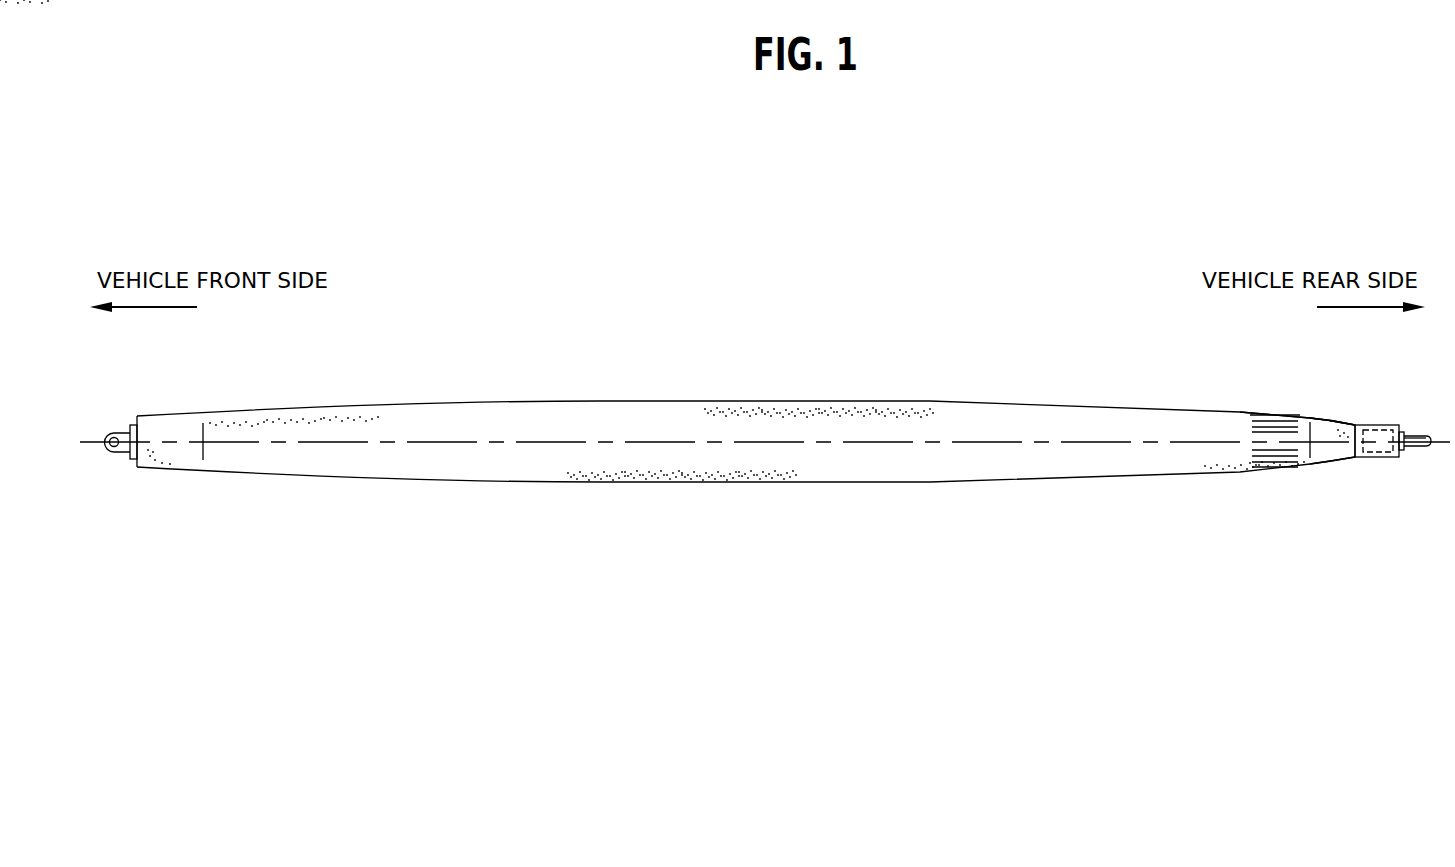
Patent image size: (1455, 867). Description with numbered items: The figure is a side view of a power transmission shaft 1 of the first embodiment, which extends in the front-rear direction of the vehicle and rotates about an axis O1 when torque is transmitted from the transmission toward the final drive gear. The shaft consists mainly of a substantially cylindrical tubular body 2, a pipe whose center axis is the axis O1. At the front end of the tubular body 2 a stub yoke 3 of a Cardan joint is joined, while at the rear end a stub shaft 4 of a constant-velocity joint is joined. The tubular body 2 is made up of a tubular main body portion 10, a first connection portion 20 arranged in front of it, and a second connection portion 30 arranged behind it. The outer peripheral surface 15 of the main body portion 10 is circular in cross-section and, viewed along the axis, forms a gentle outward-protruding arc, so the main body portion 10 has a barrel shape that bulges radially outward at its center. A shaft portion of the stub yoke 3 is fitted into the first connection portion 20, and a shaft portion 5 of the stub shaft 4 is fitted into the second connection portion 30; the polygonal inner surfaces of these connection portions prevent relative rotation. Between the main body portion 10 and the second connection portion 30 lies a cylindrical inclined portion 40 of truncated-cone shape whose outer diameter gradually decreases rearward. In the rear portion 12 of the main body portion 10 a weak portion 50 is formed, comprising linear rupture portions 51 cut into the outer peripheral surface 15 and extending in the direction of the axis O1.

The power transmission shaft 1 is at (716, 270).
The tubular body 2 is at (746, 421).
The stub yoke 3 is at (130, 430).
The stub shaft 4 is at (1415, 437).
The shaft portion 5 is at (1373, 425).
The main body portion 10 is at (971, 470).
The rear portion 12 is at (1305, 418).
The outer peripheral surface 15 is at (1092, 456).
The first connection portion 20 is at (190, 458).
The second connection portion 30 is at (1384, 443).
The inclined portion 40 is at (1327, 450).
The weak portion 50 is at (1256, 423).
The rupture portions 51 is at (1278, 418).
The axis O1 is at (546, 441).